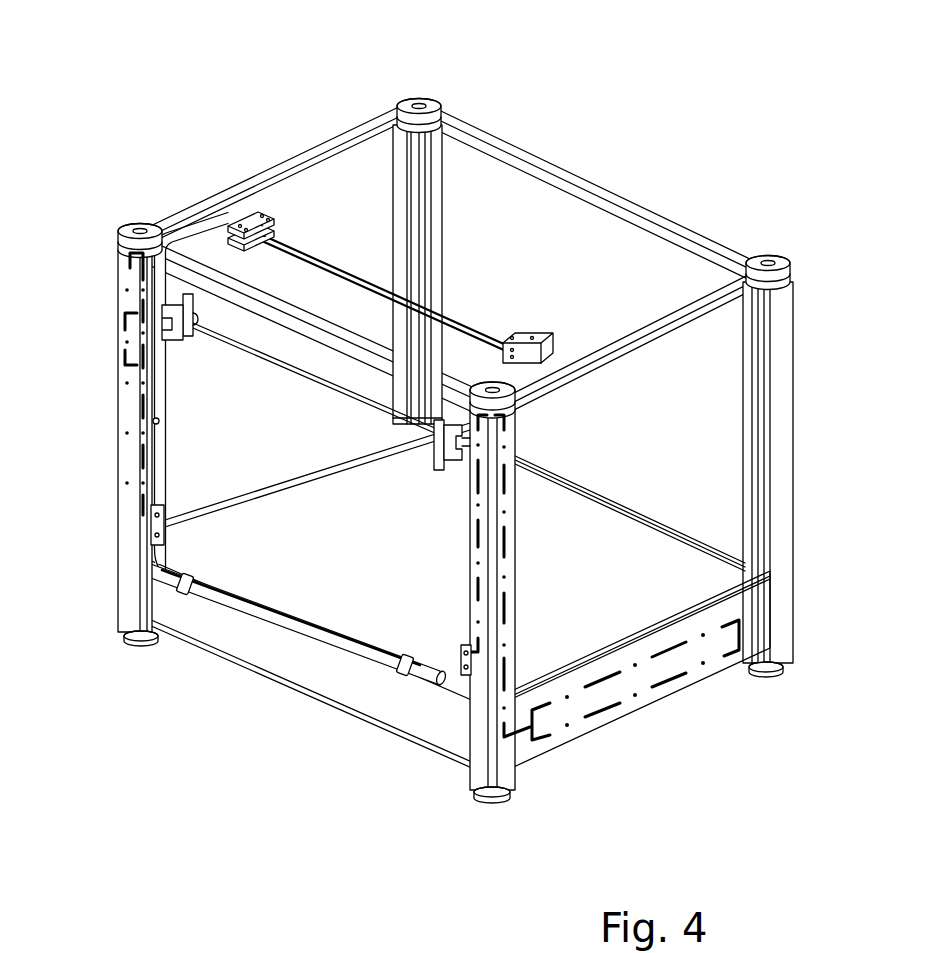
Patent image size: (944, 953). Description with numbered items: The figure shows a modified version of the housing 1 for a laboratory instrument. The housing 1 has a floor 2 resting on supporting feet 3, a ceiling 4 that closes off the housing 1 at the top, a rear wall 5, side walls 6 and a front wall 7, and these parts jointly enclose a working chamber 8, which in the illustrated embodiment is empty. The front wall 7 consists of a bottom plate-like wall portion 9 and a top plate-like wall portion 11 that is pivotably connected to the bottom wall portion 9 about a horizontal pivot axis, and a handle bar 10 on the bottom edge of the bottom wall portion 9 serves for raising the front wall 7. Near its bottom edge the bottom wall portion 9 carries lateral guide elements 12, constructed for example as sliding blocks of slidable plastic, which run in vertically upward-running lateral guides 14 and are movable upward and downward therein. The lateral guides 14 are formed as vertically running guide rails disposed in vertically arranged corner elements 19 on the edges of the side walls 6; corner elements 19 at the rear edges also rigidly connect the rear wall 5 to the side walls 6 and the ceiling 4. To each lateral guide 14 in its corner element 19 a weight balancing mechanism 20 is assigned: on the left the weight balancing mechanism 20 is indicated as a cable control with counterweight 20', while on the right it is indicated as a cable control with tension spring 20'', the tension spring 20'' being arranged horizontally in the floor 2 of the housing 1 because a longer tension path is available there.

The housing 1 is at (445, 413).
The floor 2 is at (693, 673).
The supporting feet 3 is at (134, 642).
The ceiling 4 is at (668, 255).
The rear wall 5 is at (590, 213).
The side walls 6 is at (323, 180).
The front wall 7 is at (200, 383).
The working chamber 8 is at (600, 592).
The bottom wall portion 9 is at (447, 670).
The handle bar 10 is at (250, 610).
The top wall portion 11 is at (167, 285).
The lateral guide elements 12 is at (148, 520).
The lateral guides 14 is at (153, 421).
The corner elements 19 is at (125, 587).
The weight balancing mechanism 20 is at (295, 506).
The counterweight 20' is at (98, 386).
The tension spring 20'' is at (635, 702).